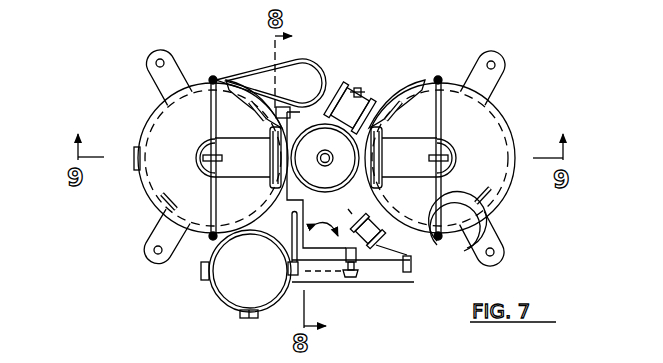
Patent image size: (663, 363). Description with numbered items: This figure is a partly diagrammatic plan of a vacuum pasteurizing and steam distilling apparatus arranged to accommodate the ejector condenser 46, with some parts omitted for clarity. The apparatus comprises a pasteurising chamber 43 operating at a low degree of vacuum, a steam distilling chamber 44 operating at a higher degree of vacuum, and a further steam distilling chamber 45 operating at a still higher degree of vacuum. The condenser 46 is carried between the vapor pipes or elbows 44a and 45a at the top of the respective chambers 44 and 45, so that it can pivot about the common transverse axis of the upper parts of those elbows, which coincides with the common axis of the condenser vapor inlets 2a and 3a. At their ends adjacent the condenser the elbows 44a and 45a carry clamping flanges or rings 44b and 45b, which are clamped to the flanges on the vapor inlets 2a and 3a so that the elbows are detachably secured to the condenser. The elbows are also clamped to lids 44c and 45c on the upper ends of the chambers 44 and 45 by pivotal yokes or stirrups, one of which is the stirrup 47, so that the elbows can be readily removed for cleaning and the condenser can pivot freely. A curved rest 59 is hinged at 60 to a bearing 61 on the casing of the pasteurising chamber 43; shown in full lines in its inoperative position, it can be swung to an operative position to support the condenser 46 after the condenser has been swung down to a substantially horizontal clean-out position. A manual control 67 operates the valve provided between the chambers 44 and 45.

The vapor inlet 2a is at (232, 147).
The vapor inlet 3a is at (408, 147).
The pasteurising chamber 43 is at (217, 296).
The steam distilling chamber 44 is at (495, 115).
The vapor pipe or elbow 44a is at (220, 78).
The clamping flange or ring 44b is at (272, 167).
The lid 44c is at (167, 180).
The second steam distilling chamber 45 is at (150, 115).
The vapor pipe or elbow 45a is at (413, 143).
The clamping flange or ring 45b is at (378, 168).
The lid 45c is at (497, 175).
The condenser 46 is at (212, 111).
The pivotal yoke or stirrup 47 is at (437, 127).
The curved rest 59 is at (303, 250).
The hinge 60 is at (297, 243).
The bearing 61 is at (292, 270).
The manual control 67 is at (357, 86).